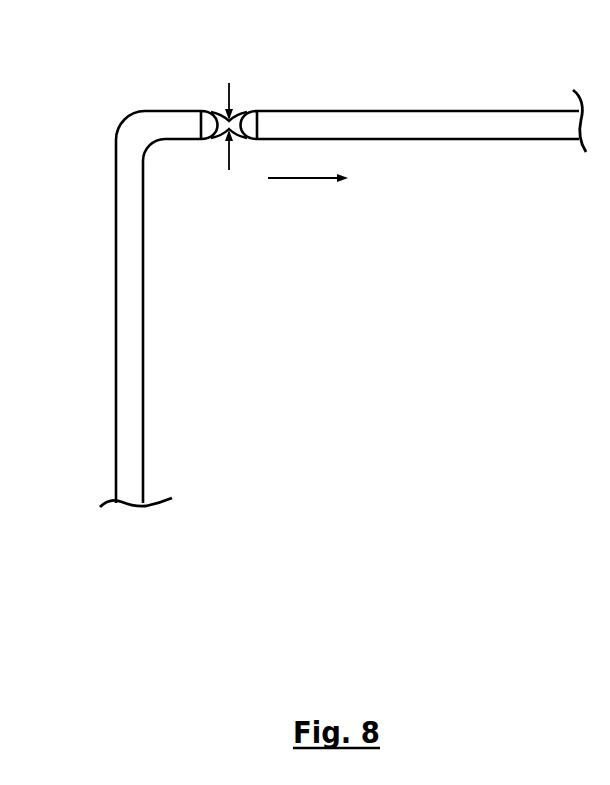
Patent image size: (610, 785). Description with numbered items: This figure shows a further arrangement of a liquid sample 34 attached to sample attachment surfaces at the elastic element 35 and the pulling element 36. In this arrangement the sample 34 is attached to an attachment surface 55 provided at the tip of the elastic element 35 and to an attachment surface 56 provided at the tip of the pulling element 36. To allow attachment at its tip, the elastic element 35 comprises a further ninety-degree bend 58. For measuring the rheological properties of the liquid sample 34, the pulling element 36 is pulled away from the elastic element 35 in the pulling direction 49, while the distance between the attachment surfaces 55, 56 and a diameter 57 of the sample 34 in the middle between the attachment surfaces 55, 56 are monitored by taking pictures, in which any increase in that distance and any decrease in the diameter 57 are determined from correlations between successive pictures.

The elastic element 35 is at (106, 309).
The pulling element 36 is at (365, 94).
The further 90° bend 58 is at (180, 198).
The attachment surface 55 is at (188, 86).
The attachment surface 56 is at (291, 86).
The sample 34 is at (246, 185).
The diameter 57 is at (233, 117).
The pulling direction 49 is at (305, 178).